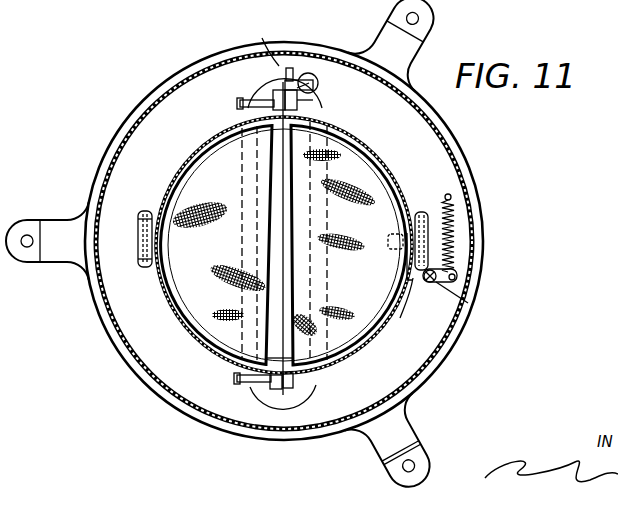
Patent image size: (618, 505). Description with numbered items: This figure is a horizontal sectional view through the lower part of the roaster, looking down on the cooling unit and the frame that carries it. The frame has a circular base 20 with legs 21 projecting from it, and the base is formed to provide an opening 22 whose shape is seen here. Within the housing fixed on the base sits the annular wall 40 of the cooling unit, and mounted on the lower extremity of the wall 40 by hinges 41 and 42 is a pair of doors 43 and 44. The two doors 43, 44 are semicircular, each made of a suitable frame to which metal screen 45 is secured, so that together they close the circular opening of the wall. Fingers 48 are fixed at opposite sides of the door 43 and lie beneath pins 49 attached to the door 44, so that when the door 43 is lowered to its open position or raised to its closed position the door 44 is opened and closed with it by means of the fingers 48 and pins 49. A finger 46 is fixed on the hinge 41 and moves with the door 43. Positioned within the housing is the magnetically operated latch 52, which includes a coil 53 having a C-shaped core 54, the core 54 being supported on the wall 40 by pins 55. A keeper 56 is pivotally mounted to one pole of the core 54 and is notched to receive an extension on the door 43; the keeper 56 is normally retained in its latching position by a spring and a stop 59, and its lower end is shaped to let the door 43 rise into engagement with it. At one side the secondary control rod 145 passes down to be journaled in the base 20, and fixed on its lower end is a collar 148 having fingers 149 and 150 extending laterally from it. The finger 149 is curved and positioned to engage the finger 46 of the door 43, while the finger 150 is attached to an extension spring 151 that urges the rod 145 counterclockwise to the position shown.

The circular base 20 is at (462, 181).
The legs 21 is at (70, 222).
The opening 22 is at (258, 166).
The annular wall 40 is at (197, 143).
The hinge 41 is at (427, 210).
The hinge 42 is at (140, 216).
The door 43 is at (385, 172).
The door 44 is at (185, 165).
The metal screen 45 is at (355, 162).
The finger 46 is at (393, 249).
The fingers 48 is at (248, 102).
The pins 49 is at (267, 99).
The magnetically operated latch 52 is at (301, 67).
The coil 53 is at (320, 84).
The C-shaped core 54 is at (309, 83).
The pins 55 is at (322, 101).
The keeper 56 is at (262, 42).
The stop 59 is at (290, 67).
The control rod 145 is at (430, 284).
The collar 148 is at (468, 303).
The finger 149 is at (400, 318).
The finger 150 is at (456, 273).
The extension spring 151 is at (452, 222).